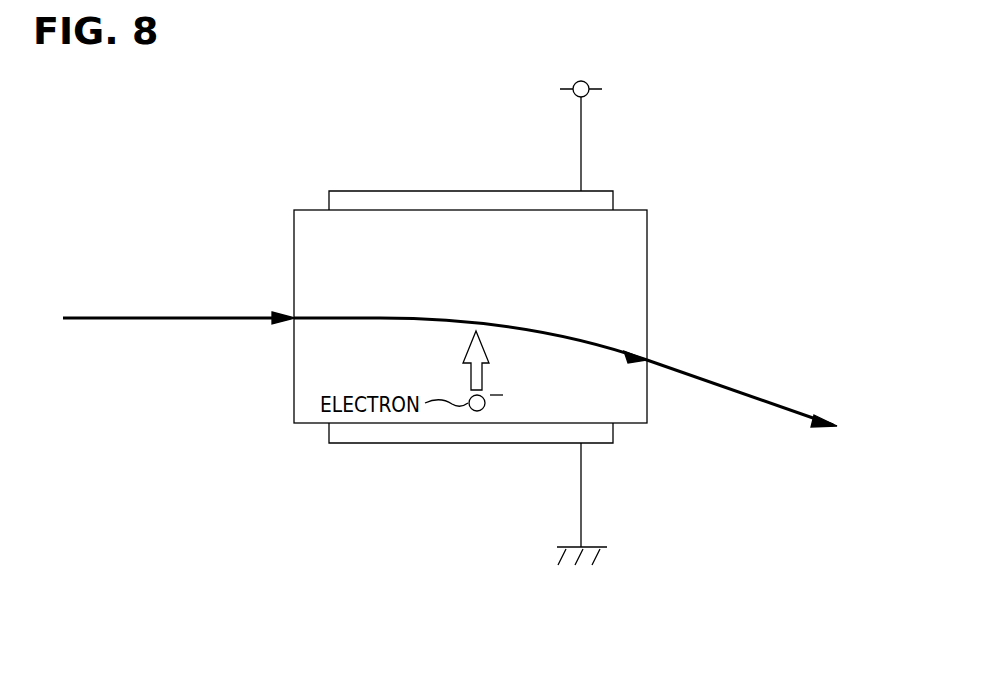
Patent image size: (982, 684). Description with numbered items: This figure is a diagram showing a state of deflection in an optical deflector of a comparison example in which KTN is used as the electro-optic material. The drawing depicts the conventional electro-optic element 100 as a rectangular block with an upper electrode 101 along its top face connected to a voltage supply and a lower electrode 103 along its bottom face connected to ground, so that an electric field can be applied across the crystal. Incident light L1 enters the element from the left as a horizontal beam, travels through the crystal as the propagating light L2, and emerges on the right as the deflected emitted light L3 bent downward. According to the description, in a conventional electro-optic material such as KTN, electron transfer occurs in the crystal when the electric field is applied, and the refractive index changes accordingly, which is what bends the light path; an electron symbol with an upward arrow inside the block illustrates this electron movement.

The optical deflection element 100 is at (634, 297).
The upper electrode 101 is at (472, 199).
The lower electrode 103 is at (479, 435).
The incident light L1 is at (172, 316).
The light propagating in element L2 is at (407, 316).
The emitted deflected light L3 is at (720, 387).